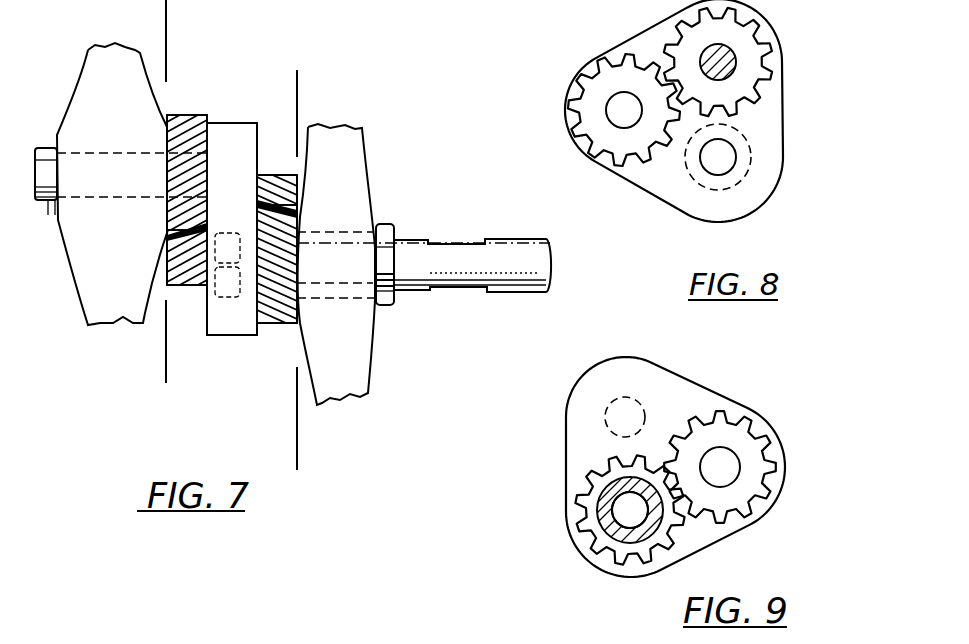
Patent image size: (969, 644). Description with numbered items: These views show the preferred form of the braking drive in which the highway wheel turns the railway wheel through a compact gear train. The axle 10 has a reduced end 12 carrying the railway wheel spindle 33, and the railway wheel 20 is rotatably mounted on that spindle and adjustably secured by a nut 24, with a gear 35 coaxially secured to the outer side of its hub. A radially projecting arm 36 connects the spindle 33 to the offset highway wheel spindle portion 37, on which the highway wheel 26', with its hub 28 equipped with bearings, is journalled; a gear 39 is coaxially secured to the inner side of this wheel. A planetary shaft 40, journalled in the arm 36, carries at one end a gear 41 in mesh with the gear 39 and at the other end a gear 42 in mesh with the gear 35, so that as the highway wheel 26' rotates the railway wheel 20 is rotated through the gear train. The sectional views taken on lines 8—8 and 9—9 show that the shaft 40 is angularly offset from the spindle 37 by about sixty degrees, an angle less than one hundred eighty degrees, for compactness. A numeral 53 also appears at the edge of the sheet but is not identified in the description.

In FIG. 7, the section line 8— 8 is at (150, 5).
In FIG. 7, the section line 9— 9 is at (312, 77).
In FIG. 7, the axle 10 is at (510, 242).
In FIG. 7, the reduced end 12 is at (342, 273).
In FIG. 8, the reduced end 12 is at (725, 157).
In FIG. 9, the reduced end 12 is at (626, 513).
In FIG. 7, the railway wheel 20 is at (355, 160).
In FIG. 7, the nut 24 is at (387, 227).
In FIG. 7, the highway wheel 26' is at (92, 190).
In FIG. 7, the hub 28 is at (50, 217).
In FIG. 7, the railway wheel spindle 33 is at (338, 230).
In FIG. 8, the railway wheel spindle 33 is at (747, 173).
In FIG. 7, the gear 35 is at (273, 318).
In FIG. 9, the gear 35 is at (577, 503).
In FIG. 7, the radially projecting arm 36 is at (247, 137).
In FIG. 8, the radially projecting arm 36 is at (652, 37).
In FIG. 9, the radially projecting arm 36 is at (697, 392).
In FIG. 7, the highway wheel spindle portion 37 is at (100, 200).
In FIG. 8, the highway wheel spindle portion 37 is at (722, 63).
In FIG. 9, the highway wheel spindle portion 37 is at (636, 400).
In FIG. 7, the gear 39 is at (190, 120).
In FIG. 8, the gear 39 is at (753, 78).
In FIG. 8, the planetary shaft 40 is at (618, 108).
In FIG. 9, the planetary shaft 40 is at (722, 472).
In FIG. 7, the gear 41 is at (185, 282).
In FIG. 8, the gear 41 is at (600, 143).
In FIG. 7, the gear 42 is at (273, 180).
In FIG. 9, the gear 42 is at (750, 450).
In FIG. 7, the element of following figure 53 is at (340, 643).